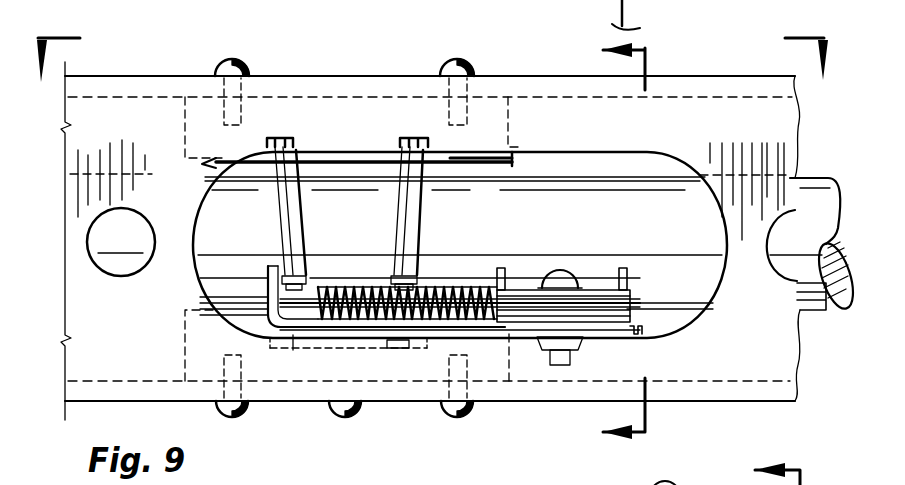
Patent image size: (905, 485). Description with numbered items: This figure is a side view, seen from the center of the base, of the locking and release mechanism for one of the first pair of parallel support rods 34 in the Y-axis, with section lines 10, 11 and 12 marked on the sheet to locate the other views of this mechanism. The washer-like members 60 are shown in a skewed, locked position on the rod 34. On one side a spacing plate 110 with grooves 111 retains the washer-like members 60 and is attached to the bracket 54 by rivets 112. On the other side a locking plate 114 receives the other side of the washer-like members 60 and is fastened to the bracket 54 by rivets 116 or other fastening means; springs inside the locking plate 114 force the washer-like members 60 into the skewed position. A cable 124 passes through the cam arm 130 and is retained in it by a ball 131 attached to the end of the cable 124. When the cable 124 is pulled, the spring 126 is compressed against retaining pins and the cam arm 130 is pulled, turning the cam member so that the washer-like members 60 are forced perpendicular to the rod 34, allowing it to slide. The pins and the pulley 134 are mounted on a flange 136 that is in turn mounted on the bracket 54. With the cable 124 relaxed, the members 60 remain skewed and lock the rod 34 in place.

The section line 10- 10 is at (432, 41).
The section line 11- 11 is at (644, 246).
The section line 12- 12 is at (798, 474).
The parallel support rod 34 is at (812, 297).
The bracket 54 is at (732, 122).
The washer-like member 60 is at (298, 182).
The spacing plate 110 is at (310, 97).
The groove 111 is at (452, 158).
The rivet 112 is at (470, 72).
The locking plate 114 is at (290, 386).
The rivet 116 is at (452, 411).
The cable 124 is at (653, 290).
The spring 126 is at (442, 288).
The cam arm 130 is at (308, 296).
The ball 131 is at (266, 298).
The pulley 134 is at (520, 284).
The flange 136 is at (343, 322).